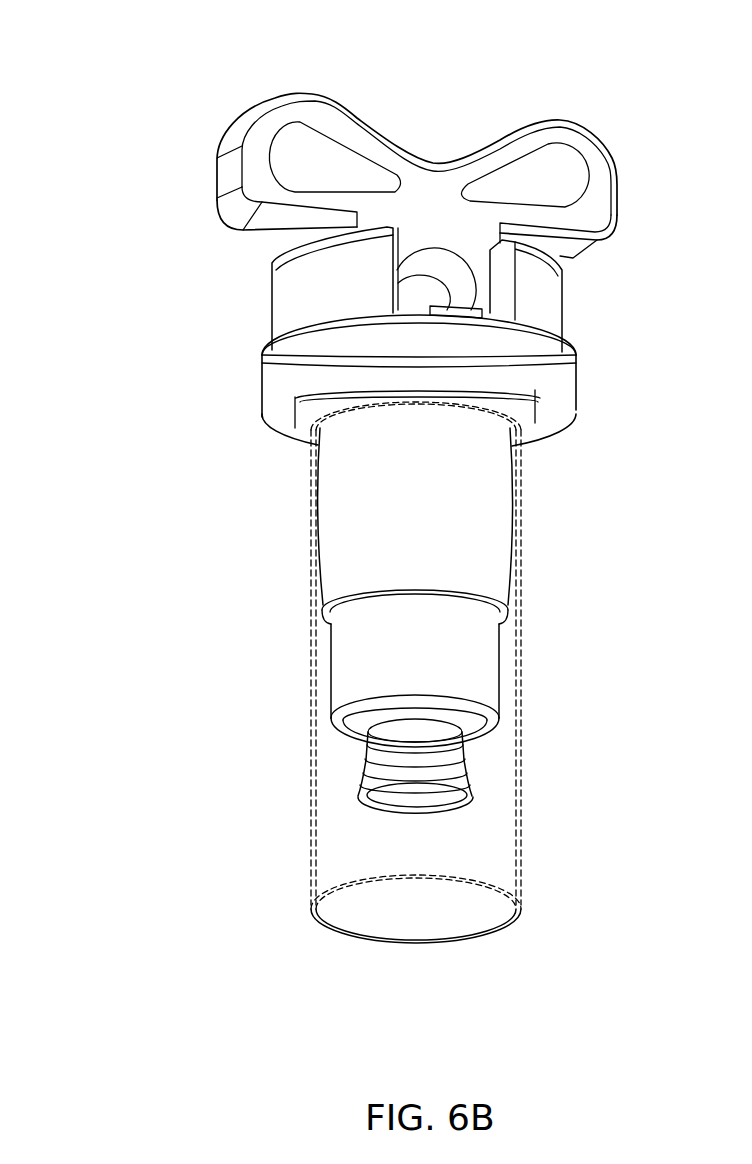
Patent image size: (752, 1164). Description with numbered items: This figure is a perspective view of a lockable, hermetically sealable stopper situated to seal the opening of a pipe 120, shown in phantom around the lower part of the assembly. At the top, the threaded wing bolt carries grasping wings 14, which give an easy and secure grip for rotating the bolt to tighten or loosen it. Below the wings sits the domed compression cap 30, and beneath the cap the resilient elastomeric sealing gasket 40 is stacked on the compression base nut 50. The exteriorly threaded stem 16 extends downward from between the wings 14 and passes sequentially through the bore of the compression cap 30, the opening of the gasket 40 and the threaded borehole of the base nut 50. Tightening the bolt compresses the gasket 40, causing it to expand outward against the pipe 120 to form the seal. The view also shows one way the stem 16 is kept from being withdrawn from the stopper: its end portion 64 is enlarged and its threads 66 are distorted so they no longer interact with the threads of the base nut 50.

The wings 14 is at (553, 117).
The domed compression cap 30 is at (217, 277).
The sealing gasket 40 is at (353, 538).
The compression base nut 50 is at (365, 655).
The stem section 16 is at (334, 796).
The enlarged end 64 is at (360, 798).
The distorted threads 66 is at (417, 782).
The pipe 120 is at (520, 835).